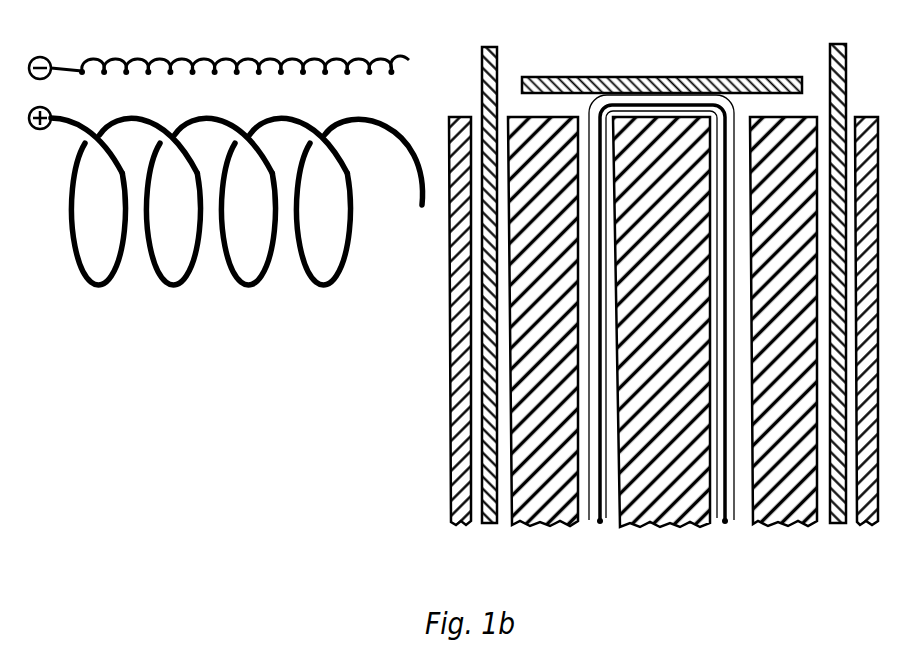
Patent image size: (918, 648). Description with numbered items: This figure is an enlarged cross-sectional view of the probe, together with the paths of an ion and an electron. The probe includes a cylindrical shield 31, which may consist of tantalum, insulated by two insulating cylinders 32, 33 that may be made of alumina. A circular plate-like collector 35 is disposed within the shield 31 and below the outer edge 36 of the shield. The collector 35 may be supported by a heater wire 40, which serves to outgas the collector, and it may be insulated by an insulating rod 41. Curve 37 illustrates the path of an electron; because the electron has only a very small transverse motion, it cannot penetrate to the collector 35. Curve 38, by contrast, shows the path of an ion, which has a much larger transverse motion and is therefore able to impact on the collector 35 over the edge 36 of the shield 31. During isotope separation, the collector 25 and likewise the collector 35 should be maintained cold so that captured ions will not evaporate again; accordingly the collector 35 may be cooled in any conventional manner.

The collector 25 is at (717, 34).
The cylindrical shield 31 is at (836, 524).
The insulating cylinder 32 is at (868, 524).
The insulating cylinder 33 is at (786, 525).
The circular plate-like collector 35 is at (658, 77).
The outer edge 36 is at (840, 44).
The path of an electron 37 is at (163, 62).
The path of an ion 38 is at (72, 221).
The heater wire 40 is at (599, 525).
The insulating rod 41 is at (666, 527).